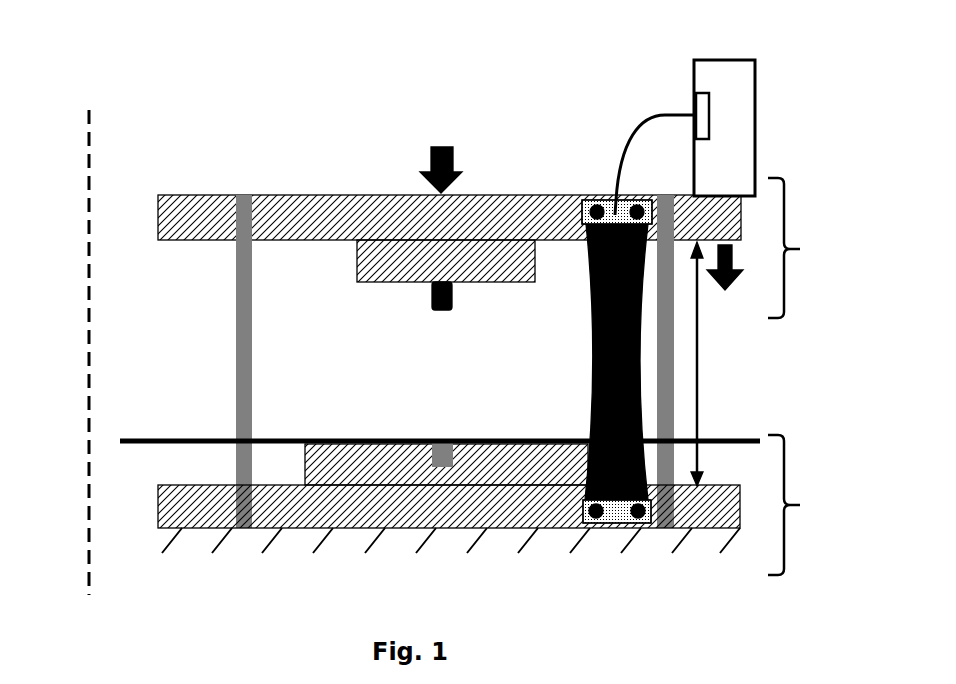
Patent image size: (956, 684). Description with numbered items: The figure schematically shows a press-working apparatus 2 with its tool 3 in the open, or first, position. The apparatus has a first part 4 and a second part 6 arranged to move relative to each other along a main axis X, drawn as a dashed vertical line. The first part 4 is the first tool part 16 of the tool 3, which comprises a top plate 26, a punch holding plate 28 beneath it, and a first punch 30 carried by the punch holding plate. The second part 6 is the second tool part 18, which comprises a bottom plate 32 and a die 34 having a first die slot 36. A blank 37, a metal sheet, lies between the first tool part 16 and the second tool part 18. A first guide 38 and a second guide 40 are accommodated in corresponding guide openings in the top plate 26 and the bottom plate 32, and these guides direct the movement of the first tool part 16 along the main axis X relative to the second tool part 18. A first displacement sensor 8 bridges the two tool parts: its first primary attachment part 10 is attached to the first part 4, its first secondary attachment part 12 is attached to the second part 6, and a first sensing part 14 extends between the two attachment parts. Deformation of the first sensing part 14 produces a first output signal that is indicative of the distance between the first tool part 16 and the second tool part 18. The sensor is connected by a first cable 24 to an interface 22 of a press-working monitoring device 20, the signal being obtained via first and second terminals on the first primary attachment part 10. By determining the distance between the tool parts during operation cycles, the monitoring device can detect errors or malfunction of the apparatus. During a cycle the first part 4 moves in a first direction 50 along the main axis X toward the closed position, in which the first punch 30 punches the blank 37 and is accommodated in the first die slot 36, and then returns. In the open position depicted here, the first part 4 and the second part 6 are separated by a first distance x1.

The press-working apparatus 2 is at (473, 352).
The tool 3 is at (320, 165).
The first part 4 is at (444, 366).
The second part 6 is at (170, 530).
The first displacement sensor 8 is at (569, 362).
The first primary attachment part 10 is at (568, 207).
The first secondary attachment part 12 is at (628, 525).
The first sensing part 14 is at (596, 358).
The first tool part 16 is at (804, 248).
The second tool part 18 is at (804, 505).
The press-working monitoring device 20 is at (713, 126).
The interface 22 is at (709, 115).
The first cable 24 is at (611, 168).
The top plate 26 is at (393, 208).
The punch holding plate 28 is at (357, 270).
The first punch 30 is at (432, 305).
The bottom plate 32 is at (358, 530).
The die 34 is at (340, 465).
The first die slot 36 is at (445, 465).
The blank 37 is at (165, 440).
The first guide 38 is at (240, 318).
The second guide 40 is at (674, 356).
The first direction 50 is at (730, 263).
The main axis X is at (88, 265).
The first distance x1 is at (697, 326).